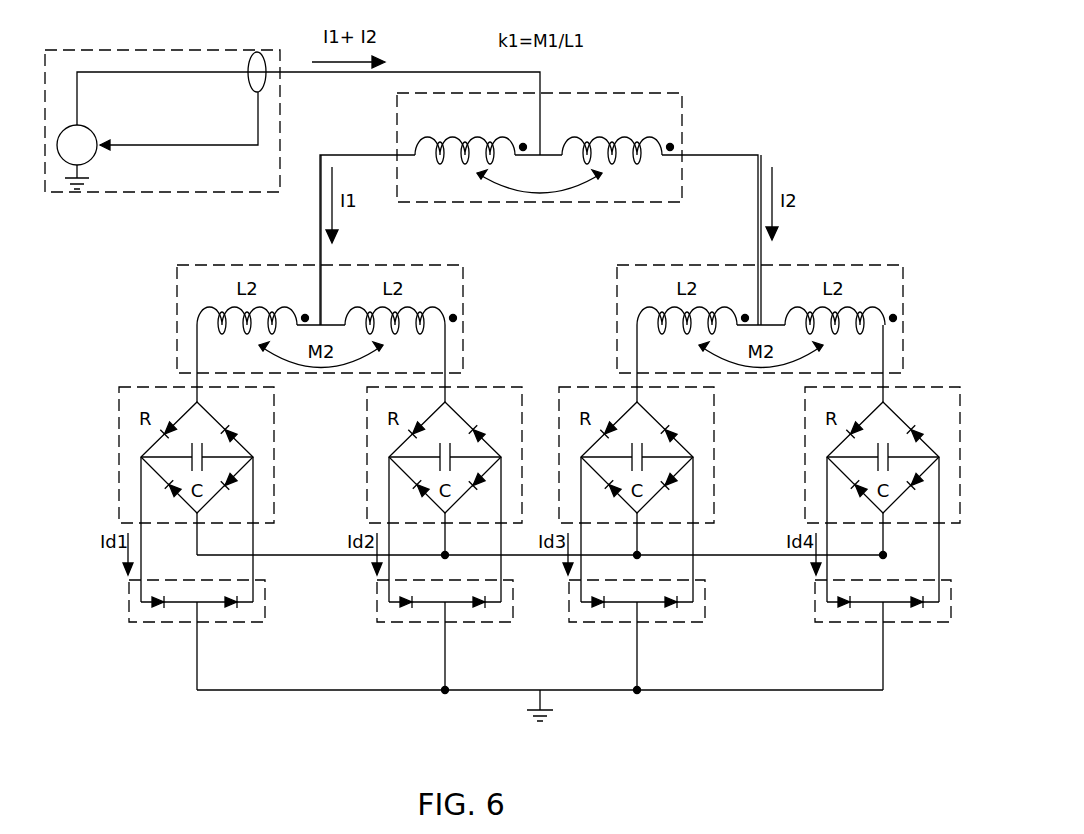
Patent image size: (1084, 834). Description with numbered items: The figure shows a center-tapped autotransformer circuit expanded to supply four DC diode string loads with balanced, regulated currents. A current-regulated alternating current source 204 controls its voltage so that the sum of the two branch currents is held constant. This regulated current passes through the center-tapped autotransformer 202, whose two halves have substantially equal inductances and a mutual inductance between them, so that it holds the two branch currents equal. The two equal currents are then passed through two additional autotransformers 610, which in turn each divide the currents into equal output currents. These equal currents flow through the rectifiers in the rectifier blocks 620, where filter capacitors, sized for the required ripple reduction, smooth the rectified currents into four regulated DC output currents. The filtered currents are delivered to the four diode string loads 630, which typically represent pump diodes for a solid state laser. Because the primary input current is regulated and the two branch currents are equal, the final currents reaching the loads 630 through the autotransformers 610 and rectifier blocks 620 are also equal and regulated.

The alternating current source 204 is at (183, 49).
The center-tapped autotransformer 202 is at (637, 93).
The additional autotransformers 610 is at (617, 296).
The rectifier blocks 620 is at (368, 485).
The diode string loads 630 is at (378, 597).